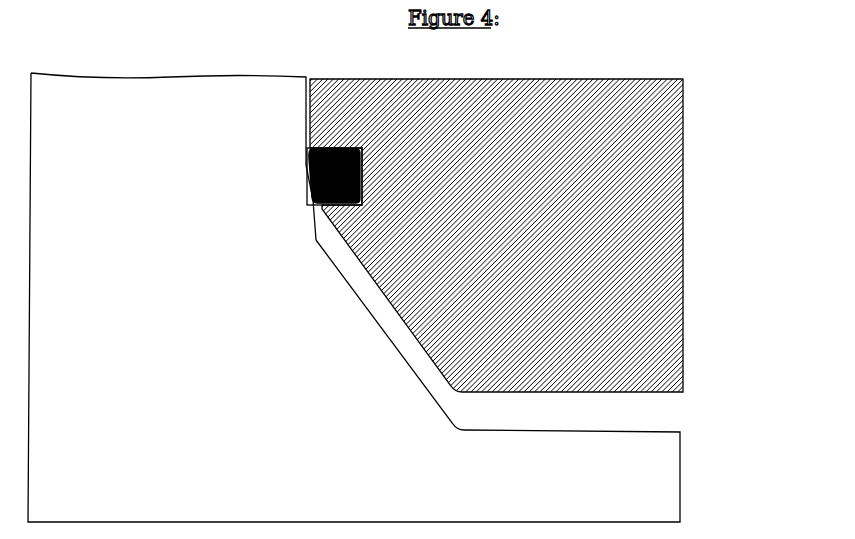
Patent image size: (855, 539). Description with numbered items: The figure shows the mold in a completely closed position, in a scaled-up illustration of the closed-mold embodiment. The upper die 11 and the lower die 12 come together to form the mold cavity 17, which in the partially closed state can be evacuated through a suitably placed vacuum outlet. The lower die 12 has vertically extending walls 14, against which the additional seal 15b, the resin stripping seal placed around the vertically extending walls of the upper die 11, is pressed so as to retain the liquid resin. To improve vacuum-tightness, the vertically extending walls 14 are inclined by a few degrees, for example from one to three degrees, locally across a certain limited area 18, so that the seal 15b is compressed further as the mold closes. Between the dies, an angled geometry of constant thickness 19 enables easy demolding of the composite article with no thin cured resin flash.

The upper die 11 is at (617, 208).
The lower die 12 is at (580, 453).
The vertically extending walls 14 is at (300, 100).
The additional seal 15b is at (366, 166).
The mold cavity 17 is at (790, 325).
The inclination angle area 18 is at (305, 187).
The angled geometry of constant thickness 19 is at (370, 290).